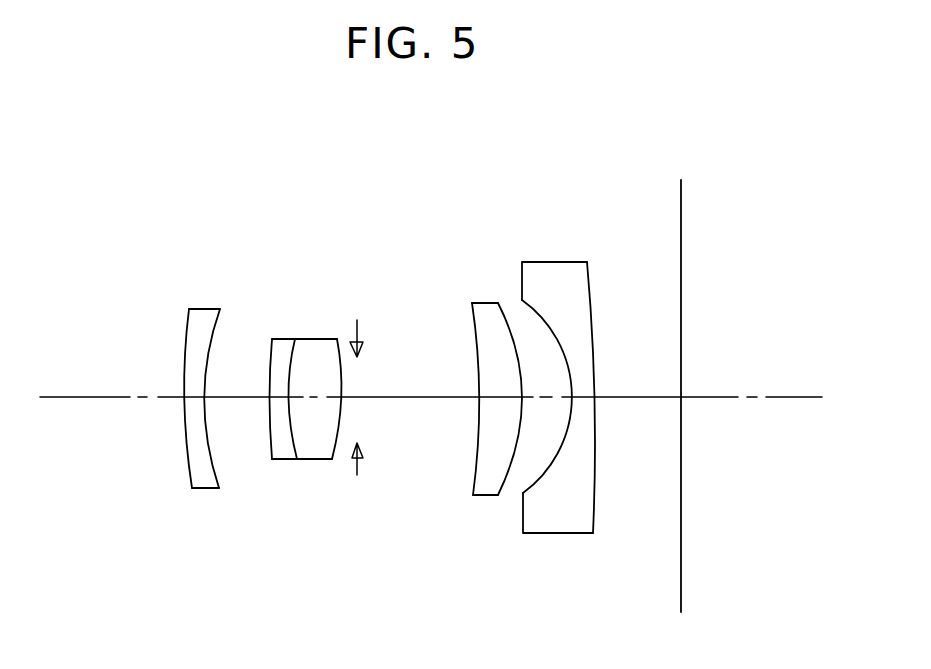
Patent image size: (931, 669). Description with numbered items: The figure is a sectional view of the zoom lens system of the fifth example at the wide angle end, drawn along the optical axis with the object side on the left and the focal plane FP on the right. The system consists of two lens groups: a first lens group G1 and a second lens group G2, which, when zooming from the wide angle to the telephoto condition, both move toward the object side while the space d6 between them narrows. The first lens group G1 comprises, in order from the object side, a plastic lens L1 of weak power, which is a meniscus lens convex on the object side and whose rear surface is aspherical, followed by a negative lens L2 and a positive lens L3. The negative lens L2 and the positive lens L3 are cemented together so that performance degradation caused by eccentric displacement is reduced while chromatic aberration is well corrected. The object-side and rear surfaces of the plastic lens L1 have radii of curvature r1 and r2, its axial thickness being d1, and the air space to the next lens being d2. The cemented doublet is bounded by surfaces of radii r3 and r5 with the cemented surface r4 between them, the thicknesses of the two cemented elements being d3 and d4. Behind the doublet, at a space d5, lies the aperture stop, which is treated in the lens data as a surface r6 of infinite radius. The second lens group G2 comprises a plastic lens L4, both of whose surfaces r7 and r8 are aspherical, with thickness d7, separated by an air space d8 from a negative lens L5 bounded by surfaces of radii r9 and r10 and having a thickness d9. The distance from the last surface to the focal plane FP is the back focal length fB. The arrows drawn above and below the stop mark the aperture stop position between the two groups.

The first lens group G1 is at (367, 172).
The second lens group G2 is at (609, 172).
The plastic lens L1 is at (198, 338).
The negative lens L2 is at (284, 323).
The positive lens L3 is at (322, 323).
The plastic lens L4 is at (476, 341).
The negative lens L5 is at (582, 360).
The radius of curvature of lens surface r1 is at (187, 328).
The radius of curvature of lens surface r2 is at (225, 327).
The radius of curvature of lens surface r3 is at (272, 358).
The radius of curvature of lens surface r4 is at (288, 350).
The radius of curvature of lens surface r5 is at (335, 335).
The radius of curvature of lens surface r6 is at (358, 370).
The radius of curvature of lens surface r7 is at (476, 350).
The radius of curvature of lens surface r8 is at (508, 318).
The radius of curvature of lens surface r9 is at (535, 305).
The radius of curvature of lens surface r10 is at (592, 310).
The space between lens surfaces d1 is at (197, 397).
The space between lens surfaces d2 is at (230, 424).
The space between lens surfaces d3 is at (280, 459).
The space between lens surfaces d4 is at (309, 424).
The space between lens surfaces d5 is at (340, 460).
The space between lens groups d6 is at (400, 424).
The space between lens surfaces d7 is at (475, 485).
The space between lens surfaces d8 is at (540, 424).
The space between lens surfaces d9 is at (597, 450).
The focal plane FP is at (682, 206).
The back focal length fB is at (656, 399).